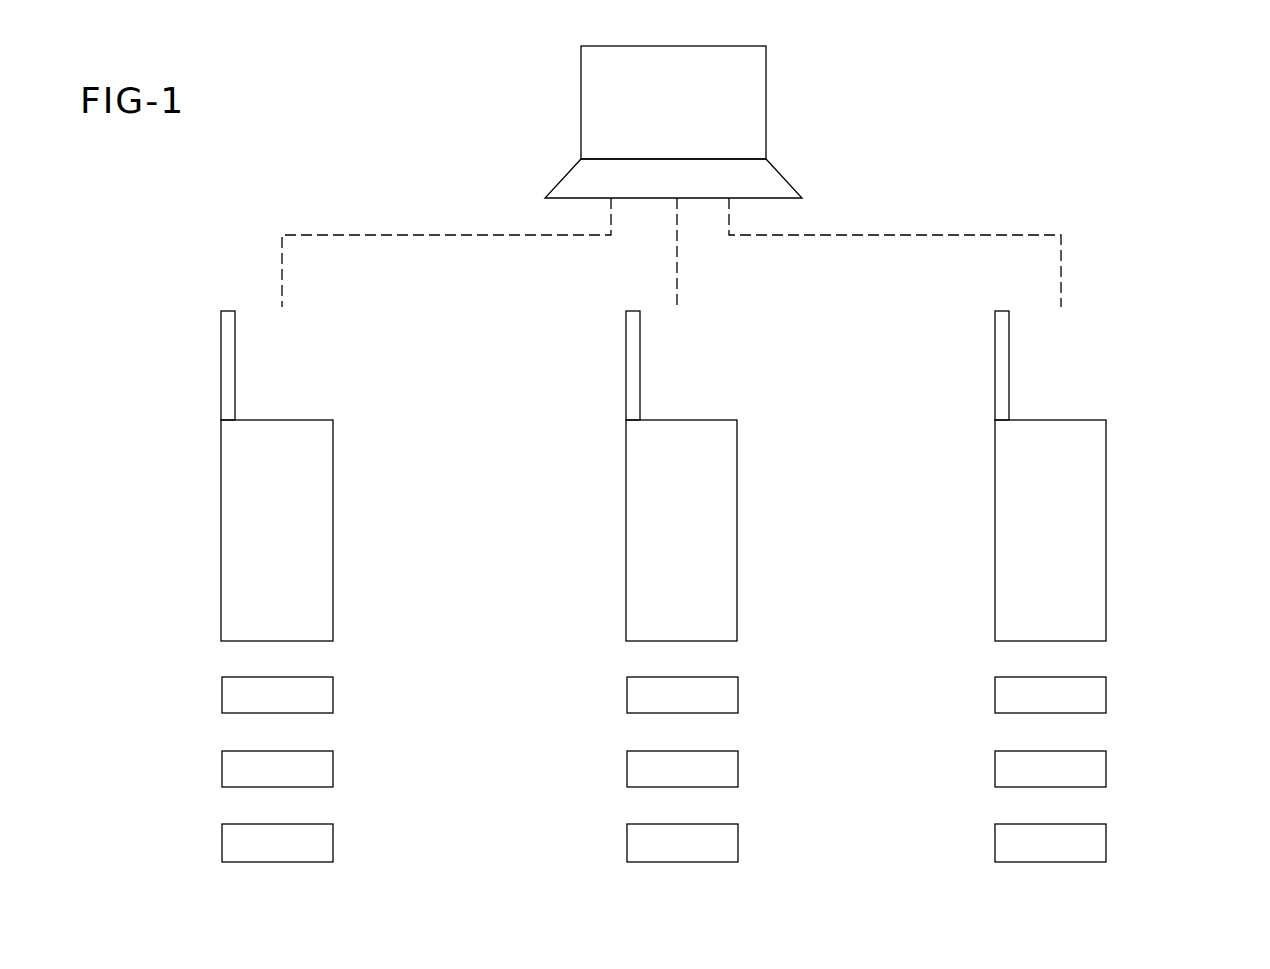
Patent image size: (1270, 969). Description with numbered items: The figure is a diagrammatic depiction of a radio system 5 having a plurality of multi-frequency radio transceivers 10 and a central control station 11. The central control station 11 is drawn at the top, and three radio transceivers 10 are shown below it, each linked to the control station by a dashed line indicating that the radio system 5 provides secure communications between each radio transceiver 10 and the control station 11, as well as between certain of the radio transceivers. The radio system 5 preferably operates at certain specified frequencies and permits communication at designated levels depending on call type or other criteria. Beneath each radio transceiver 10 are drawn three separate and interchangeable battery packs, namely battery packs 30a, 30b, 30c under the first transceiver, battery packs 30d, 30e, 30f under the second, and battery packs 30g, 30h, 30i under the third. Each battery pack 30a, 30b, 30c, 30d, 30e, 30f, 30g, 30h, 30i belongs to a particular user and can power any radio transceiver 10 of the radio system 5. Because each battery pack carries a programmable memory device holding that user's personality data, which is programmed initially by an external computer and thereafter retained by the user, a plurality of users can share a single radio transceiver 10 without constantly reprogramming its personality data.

The radio system 5 is at (671, 175).
The central control station 11 is at (738, 106).
The multi-frequency radio transceiver 10 is at (273, 420).
The battery pack 30a is at (333, 697).
The battery pack 30b is at (333, 771).
The battery pack 30c is at (333, 845).
The battery pack 30d is at (738, 697).
The battery pack 30e is at (738, 771).
The battery pack 30f is at (738, 845).
The battery pack 30g is at (1106, 697).
The battery pack 30h is at (1106, 771).
The battery pack 30i is at (1106, 845).